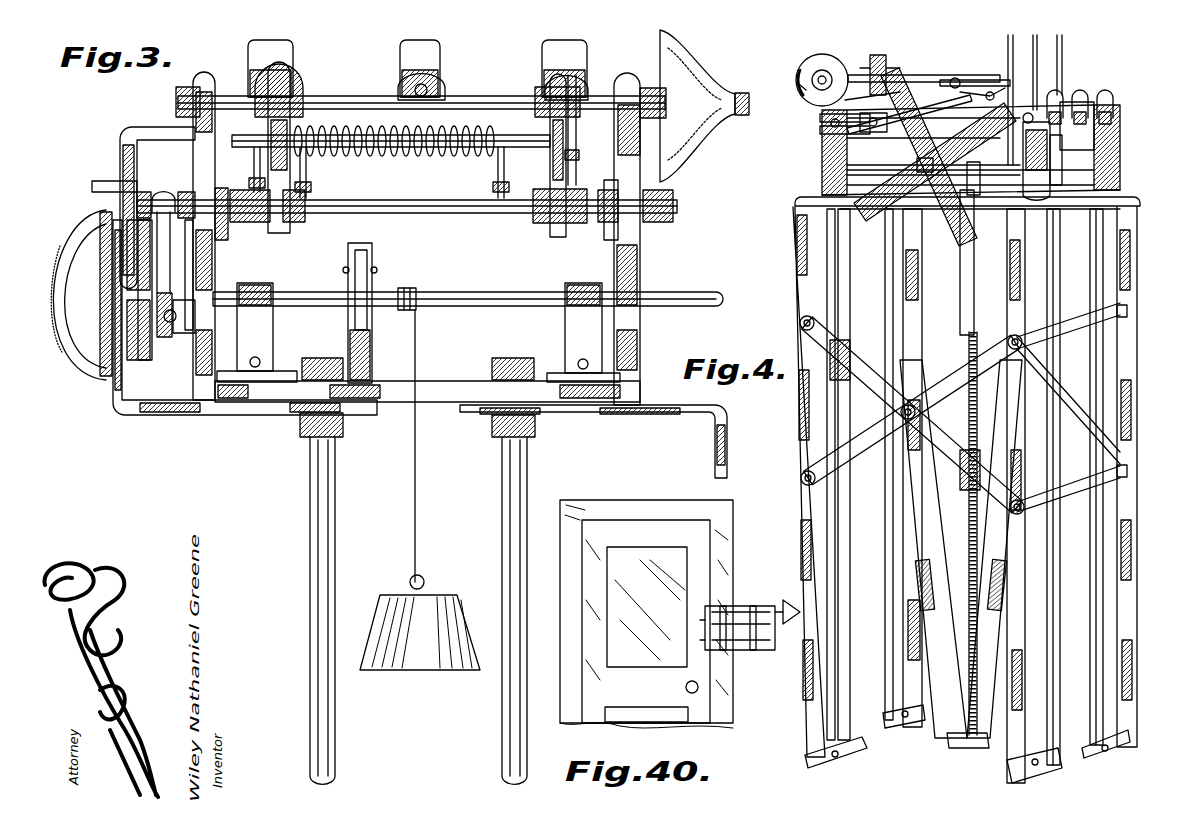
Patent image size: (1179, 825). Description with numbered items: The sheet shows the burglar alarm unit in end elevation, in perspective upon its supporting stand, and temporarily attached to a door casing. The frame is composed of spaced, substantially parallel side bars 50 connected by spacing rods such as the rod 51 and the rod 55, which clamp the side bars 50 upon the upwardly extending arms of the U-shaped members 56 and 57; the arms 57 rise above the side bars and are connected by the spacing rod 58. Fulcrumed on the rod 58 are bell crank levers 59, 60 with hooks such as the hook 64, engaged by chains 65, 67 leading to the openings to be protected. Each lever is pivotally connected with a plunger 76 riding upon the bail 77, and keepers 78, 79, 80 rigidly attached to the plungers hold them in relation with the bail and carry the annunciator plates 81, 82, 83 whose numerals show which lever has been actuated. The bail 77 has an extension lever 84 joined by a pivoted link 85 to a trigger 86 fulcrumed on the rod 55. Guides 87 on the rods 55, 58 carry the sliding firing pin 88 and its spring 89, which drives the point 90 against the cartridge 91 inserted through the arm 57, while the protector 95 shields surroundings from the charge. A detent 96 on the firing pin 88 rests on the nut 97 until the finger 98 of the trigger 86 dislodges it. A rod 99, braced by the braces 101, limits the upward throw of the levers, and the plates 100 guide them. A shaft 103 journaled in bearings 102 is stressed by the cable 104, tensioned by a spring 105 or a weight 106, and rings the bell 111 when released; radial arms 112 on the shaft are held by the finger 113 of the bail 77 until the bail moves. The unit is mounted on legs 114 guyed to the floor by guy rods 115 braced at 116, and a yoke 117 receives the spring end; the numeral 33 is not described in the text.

In FIG. 3, the bracket hook 33 is at (238, 330).
In FIG. 4, the side bar 50 is at (830, 160).
In FIG. 4, the spacing rod 51 is at (1120, 140).
In FIG. 3, the spacing rod 55 is at (492, 214).
In FIG. 4, the spacing rod 55 is at (822, 130).
In FIG. 4, the U-shaped member 56 is at (1118, 162).
In FIG. 3, the arm 57 is at (216, 243).
In FIG. 4, the arm 57 is at (840, 137).
In FIG. 40, the arm 57 is at (775, 648).
In FIG. 3, the spacing rod 58 is at (483, 96).
In FIG. 4, the spacing rod 58 is at (868, 73).
In FIG. 4, the bell crank lever 59 is at (953, 78).
In FIG. 4, the bell crank lever 60 is at (1055, 132).
In FIG. 4, the hook 64 is at (1033, 70).
In FIG. 4, the chain 65 is at (1008, 44).
In FIG. 4, the chain 67 is at (1063, 50).
In FIG. 4, the plunger 76 is at (882, 56).
In FIG. 4, the bail 77 is at (818, 66).
In FIG. 3, the keeper 78 is at (580, 84).
In FIG. 3, the keeper 79 is at (438, 80).
In FIG. 3, the keeper 80 is at (292, 78).
In FIG. 3, the annunciator plate 81 is at (587, 50).
In FIG. 3, the annunciator plate 82 is at (440, 48).
In FIG. 3, the annunciator plate 83 is at (292, 48).
In FIG. 3, the extension lever 84 is at (190, 280).
In FIG. 3, the pivoted link 85 is at (166, 338).
In FIG. 3, the trigger 86 is at (178, 334).
In FIG. 3, the guide 87 is at (300, 160).
In FIG. 3, the firing pin 88 is at (260, 142).
In FIG. 3, the spring 89 is at (400, 154).
In FIG. 4, the spring 89 is at (886, 102).
In FIG. 3, the point 90 is at (578, 128).
In FIG. 3, the cartridge 91 is at (616, 152).
In FIG. 40, the cartridge 91 is at (783, 620).
In FIG. 3, the protector 95 is at (702, 74).
In FIG. 4, the protector 95 is at (800, 85).
In FIG. 3, the detent 96 is at (120, 200).
In FIG. 3, the nut 97 is at (160, 200).
In FIG. 3, the finger 98 is at (112, 180).
In FIG. 4, the rod 99 is at (985, 92).
In FIG. 3, the plate 100 is at (290, 150).
In FIG. 4, the brace 101 is at (1018, 160).
In FIG. 3, the bearing 102 is at (274, 325).
In FIG. 4, the bearing 102 is at (1050, 168).
In FIG. 3, the shaft 103 is at (486, 290).
In FIG. 4, the shaft 103 is at (980, 190).
In FIG. 3, the cable 104 is at (418, 349).
In FIG. 4, the cable 104 is at (966, 285).
In FIG. 4, the spring 105 is at (1000, 530).
In FIG. 3, the weight 106 is at (478, 582).
In FIG. 3, the bell 111 is at (80, 372).
In FIG. 4, the arm 112 is at (862, 222).
In FIG. 4, the finger 113 is at (822, 118).
In FIG. 3, the leg 114 is at (714, 458).
In FIG. 4, the leg 114 is at (805, 438).
In FIG. 3, the guy rod 115 is at (336, 522).
In FIG. 4, the guy rod 115 is at (846, 326).
In FIG. 4, the brace 116 is at (940, 380).
In FIG. 4, the yoke 117 is at (968, 562).